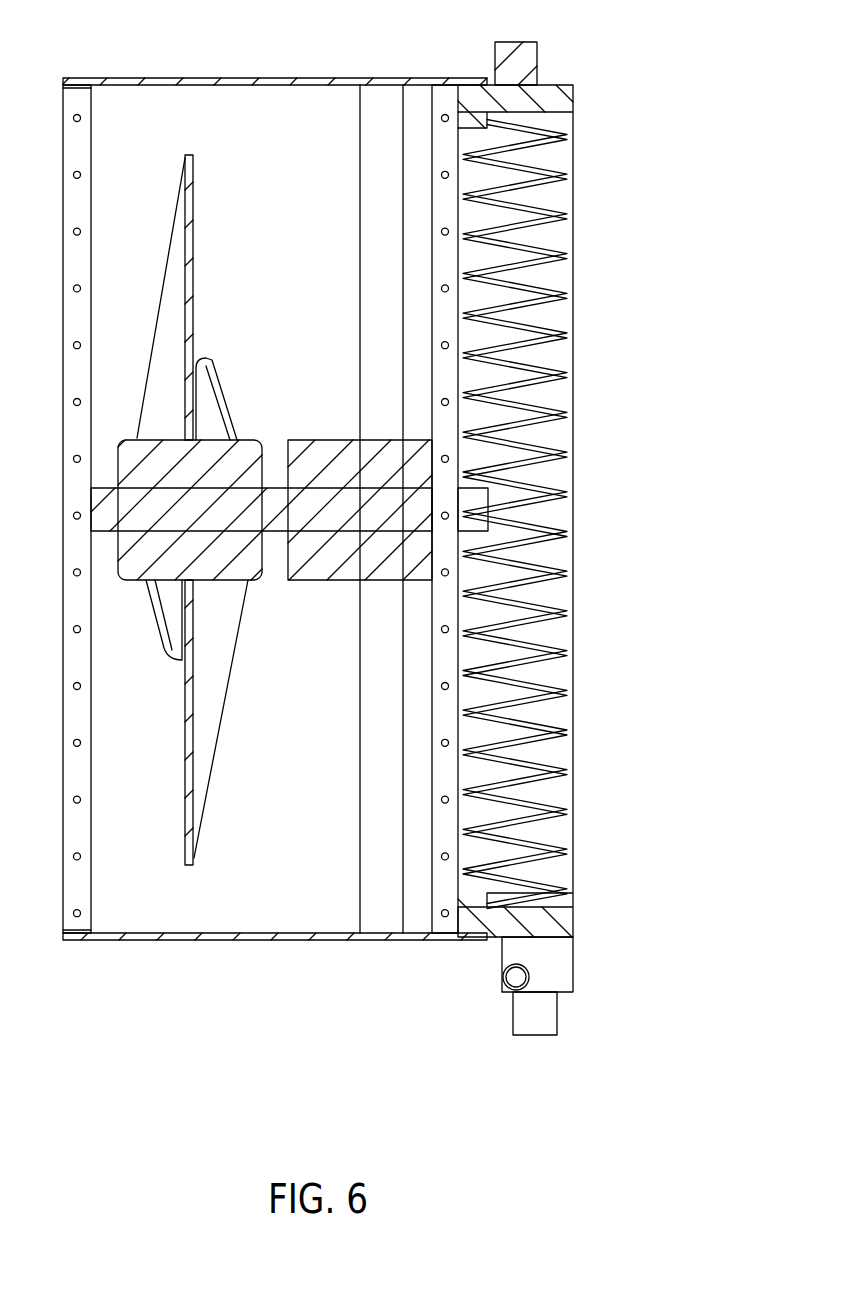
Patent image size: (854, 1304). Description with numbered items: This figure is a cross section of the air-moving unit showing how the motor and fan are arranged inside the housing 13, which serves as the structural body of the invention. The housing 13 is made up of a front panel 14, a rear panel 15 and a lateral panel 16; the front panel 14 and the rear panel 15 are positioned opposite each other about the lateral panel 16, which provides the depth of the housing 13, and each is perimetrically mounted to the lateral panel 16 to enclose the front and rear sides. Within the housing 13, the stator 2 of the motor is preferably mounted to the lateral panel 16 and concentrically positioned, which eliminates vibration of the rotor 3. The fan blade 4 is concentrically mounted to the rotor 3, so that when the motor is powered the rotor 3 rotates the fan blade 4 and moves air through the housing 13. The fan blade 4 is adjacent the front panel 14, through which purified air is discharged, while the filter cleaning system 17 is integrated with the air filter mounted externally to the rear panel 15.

The stator 2 is at (343, 440).
The rotor 3 is at (277, 527).
The fan blade 4 is at (192, 230).
The housing 13 is at (660, 605).
The front panel 14 is at (83, 880).
The rear panel 15 is at (432, 893).
The lateral panel 16 is at (232, 84).
The filter cleaning system 17 is at (539, 1052).